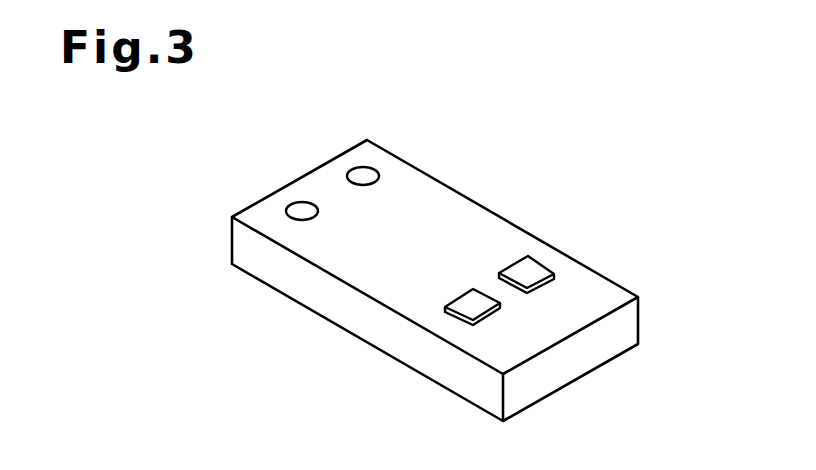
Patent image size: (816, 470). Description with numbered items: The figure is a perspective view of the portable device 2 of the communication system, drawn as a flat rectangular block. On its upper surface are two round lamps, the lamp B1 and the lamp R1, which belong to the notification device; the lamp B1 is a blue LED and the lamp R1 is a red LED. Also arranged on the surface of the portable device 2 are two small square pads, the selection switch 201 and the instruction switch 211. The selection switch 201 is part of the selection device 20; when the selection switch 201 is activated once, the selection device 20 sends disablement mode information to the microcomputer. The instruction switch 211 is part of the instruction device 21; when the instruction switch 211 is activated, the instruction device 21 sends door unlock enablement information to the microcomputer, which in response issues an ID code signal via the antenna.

The portable device 2 is at (505, 185).
The lamp R1 is at (302, 208).
The lamp B1 is at (363, 173).
The selection switch 201 is at (532, 268).
The selection device 20 is at (552, 230).
The instruction switch 211 is at (473, 302).
The instruction device 21 is at (423, 363).